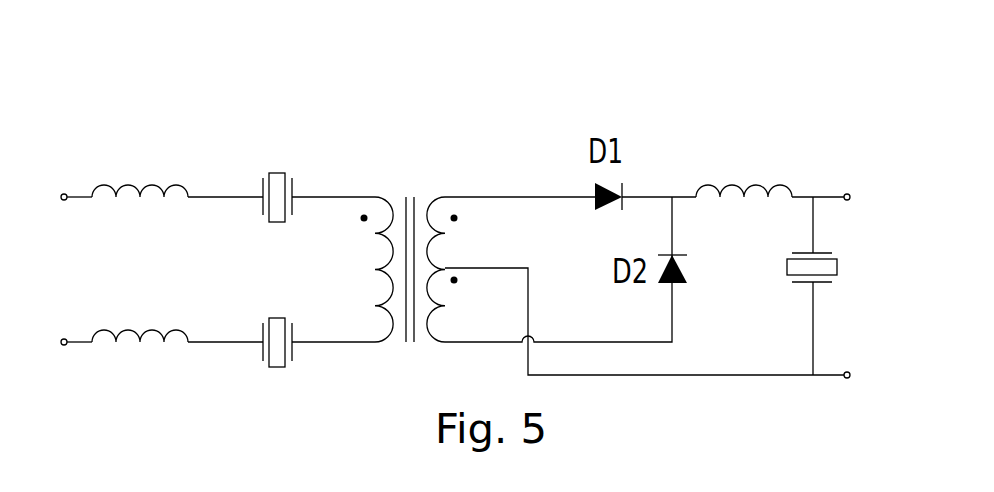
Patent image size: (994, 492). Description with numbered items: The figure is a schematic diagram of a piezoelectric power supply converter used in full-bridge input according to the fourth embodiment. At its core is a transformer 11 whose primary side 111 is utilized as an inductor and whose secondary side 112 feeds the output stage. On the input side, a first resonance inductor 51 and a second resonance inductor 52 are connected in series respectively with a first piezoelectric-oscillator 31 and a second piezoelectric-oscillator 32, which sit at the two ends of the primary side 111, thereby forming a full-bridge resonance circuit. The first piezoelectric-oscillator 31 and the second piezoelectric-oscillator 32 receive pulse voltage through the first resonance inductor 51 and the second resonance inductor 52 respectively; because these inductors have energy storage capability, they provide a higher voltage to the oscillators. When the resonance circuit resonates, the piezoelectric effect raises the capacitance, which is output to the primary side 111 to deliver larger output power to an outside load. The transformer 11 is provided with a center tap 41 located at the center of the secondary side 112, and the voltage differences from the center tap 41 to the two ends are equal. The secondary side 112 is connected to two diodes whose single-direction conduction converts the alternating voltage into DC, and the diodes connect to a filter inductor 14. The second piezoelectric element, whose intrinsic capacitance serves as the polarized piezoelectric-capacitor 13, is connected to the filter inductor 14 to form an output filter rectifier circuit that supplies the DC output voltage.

The transformer 11 is at (421, 171).
The primary side 111 is at (372, 197).
The secondary side 112 is at (443, 197).
The first resonance inductor 51 is at (155, 183).
The second resonance inductor 52 is at (153, 328).
The first piezoelectric-oscillator 31 is at (277, 173).
The second piezoelectric-oscillator 32 is at (277, 318).
The center tap 41 is at (485, 268).
The filter inductor 14 is at (760, 181).
The piezoelectric-capacitor 13 is at (837, 267).